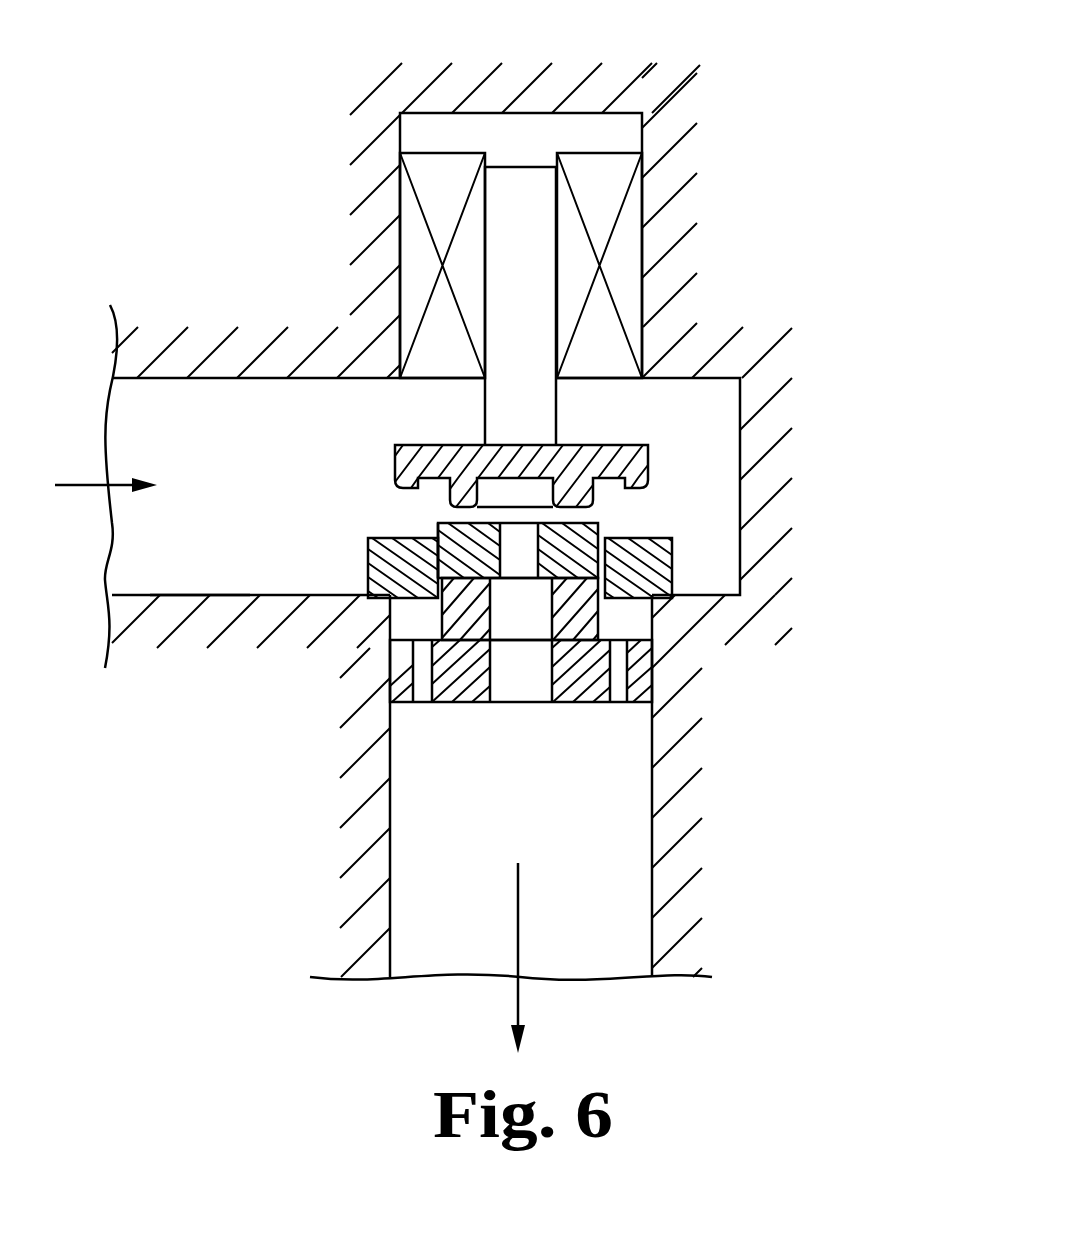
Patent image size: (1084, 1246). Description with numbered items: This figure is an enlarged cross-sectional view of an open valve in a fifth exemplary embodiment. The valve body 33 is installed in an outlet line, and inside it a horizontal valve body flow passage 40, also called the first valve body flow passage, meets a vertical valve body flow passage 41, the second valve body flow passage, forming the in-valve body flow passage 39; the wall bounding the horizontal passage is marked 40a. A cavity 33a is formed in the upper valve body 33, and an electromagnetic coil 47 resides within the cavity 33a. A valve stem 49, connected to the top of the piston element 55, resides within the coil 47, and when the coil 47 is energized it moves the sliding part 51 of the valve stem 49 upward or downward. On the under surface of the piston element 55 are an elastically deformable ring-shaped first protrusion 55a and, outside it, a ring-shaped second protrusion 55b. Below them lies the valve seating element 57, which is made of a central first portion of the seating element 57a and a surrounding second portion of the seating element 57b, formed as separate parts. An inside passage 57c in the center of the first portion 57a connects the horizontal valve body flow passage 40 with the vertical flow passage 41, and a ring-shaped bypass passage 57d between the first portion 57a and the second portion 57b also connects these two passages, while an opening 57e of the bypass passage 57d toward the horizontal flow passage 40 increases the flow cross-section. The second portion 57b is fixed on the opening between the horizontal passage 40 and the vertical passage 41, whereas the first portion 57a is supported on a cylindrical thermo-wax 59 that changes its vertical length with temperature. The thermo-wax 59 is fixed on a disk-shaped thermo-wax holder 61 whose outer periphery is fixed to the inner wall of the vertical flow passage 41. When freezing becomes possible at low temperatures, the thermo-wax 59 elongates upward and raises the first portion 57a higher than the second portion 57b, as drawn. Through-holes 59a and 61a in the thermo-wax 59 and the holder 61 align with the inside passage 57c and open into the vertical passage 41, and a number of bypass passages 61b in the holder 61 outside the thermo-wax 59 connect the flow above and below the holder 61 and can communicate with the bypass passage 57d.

The valve body 33 is at (321, 714).
The cavity 33a is at (402, 183).
The in-valve body flow passage 39 is at (384, 715).
The horizontal valve body flow passage 40 is at (248, 578).
The inlet passage wall 40a is at (170, 593).
The vertical valve body flow passage 41 is at (403, 827).
The electromagnetic coil 47 is at (607, 203).
The valve stem 49 is at (518, 192).
The sliding part 51 is at (485, 253).
The piston element 55 is at (664, 394).
The first protrusion 55a is at (688, 380).
The second protrusion 55b is at (622, 490).
The valve seating element 57 is at (607, 517).
The first portion of the seating element 57a is at (575, 514).
The second portion of the seating element 57b is at (657, 540).
The inside passage 57c is at (520, 530).
The bypass passage 57d is at (370, 573).
The opening 57e is at (432, 537).
The thermo-wax 59 is at (621, 674).
The through-hole 59a is at (517, 627).
The thermo-wax holder 61 is at (596, 733).
The through-hole 61a is at (490, 690).
The bypass passages 61b is at (418, 688).